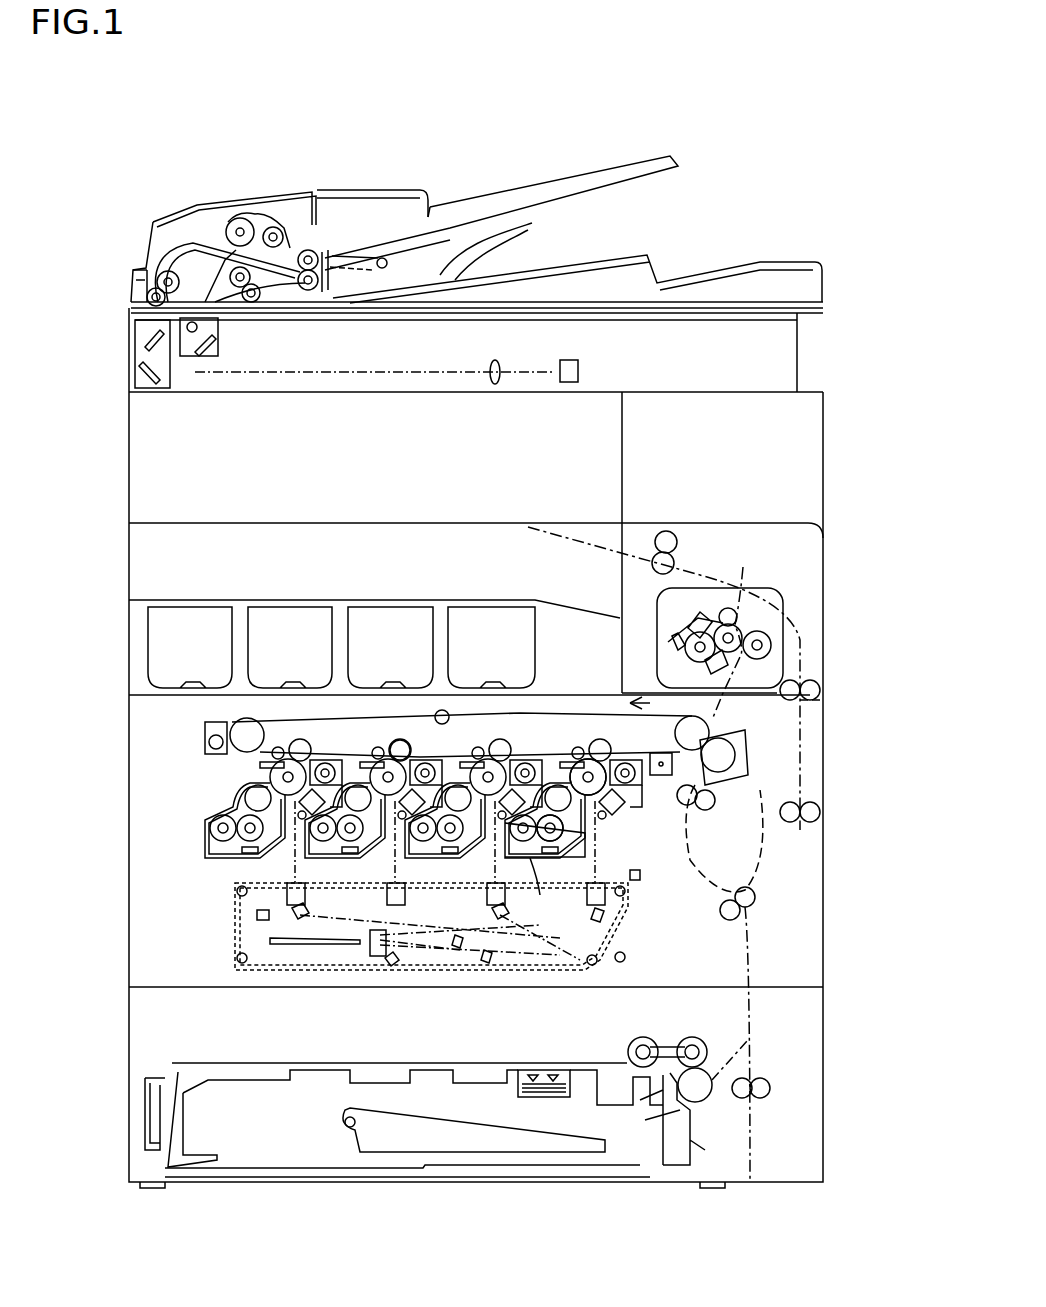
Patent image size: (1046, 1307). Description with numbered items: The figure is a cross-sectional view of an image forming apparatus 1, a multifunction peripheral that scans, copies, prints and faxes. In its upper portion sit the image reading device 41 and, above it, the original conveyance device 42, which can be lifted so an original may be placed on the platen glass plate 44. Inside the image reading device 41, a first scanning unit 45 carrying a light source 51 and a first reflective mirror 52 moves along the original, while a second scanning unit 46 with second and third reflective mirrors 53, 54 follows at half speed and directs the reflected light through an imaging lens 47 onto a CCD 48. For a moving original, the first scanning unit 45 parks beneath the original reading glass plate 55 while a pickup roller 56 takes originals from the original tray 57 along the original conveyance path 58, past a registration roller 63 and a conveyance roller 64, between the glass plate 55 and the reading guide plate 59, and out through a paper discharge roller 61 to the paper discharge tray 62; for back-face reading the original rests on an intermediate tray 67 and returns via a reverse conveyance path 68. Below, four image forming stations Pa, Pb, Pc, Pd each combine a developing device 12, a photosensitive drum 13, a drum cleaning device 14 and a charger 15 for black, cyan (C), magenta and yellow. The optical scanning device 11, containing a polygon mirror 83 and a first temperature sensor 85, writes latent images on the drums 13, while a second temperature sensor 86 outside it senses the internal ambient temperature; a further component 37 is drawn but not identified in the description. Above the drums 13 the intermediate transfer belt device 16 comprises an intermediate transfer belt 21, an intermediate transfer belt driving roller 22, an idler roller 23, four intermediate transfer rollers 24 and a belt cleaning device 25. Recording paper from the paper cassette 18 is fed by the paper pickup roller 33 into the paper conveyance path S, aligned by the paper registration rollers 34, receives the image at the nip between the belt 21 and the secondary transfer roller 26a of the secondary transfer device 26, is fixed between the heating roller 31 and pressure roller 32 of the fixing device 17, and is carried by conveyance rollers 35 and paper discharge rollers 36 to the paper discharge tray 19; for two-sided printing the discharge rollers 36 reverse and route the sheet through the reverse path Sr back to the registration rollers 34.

The image forming apparatus 1 is at (118, 852).
The optical scanning device 11 is at (595, 958).
The developing device 12 is at (538, 860).
The photosensitive drum 13 is at (575, 762).
The drum cleaning device 14 is at (630, 778).
The charger 15 is at (598, 816).
The intermediate transfer belt device 16 is at (538, 700).
The fixing device 17 is at (783, 640).
The paper cassette 18 is at (145, 1110).
The paper discharge tray 19 is at (262, 598).
The intermediate transfer belt 21 is at (538, 712).
The intermediate transfer belt driving roller 22 is at (700, 722).
The idler roller 23 is at (248, 730).
The intermediate transfer roller 24 is at (398, 740).
The belt cleaning device 25 is at (205, 742).
The secondary transfer device 26 is at (755, 782).
The secondary transfer roller 26a is at (760, 760).
The heating roller 31 is at (745, 590).
The pressure roller 32 is at (770, 645).
The paper pickup roller 33 is at (640, 1035).
The paper registration rollers 34 is at (712, 808).
The conveyance rollers 35 is at (758, 897).
The paper discharge rollers 36 is at (668, 530).
The sensor 37 is at (662, 778).
The image reading device 41 is at (823, 342).
The original conveyance device 42 is at (735, 242).
The platen glass plate 44 is at (645, 318).
The first scanning unit 45 is at (205, 360).
The second scanning unit 46 is at (152, 390).
The imaging lens 47 is at (495, 385).
The CCD 48 is at (569, 383).
The light source 51 is at (198, 328).
The first reflective mirror 52 is at (215, 350).
The second reflective mirror 53 is at (145, 335).
The third reflective mirror 54 is at (138, 370).
The original reading glass plate 55 is at (185, 290).
The pickup roller 56 is at (272, 226).
The original tray 57 is at (545, 175).
The original conveyance path 58 is at (148, 286).
The reading guide plate 59 is at (205, 245).
The paper discharge roller 61 is at (308, 292).
The paper discharge tray 62 is at (568, 265).
The registration roller 63 is at (150, 270).
The conveyance roller 64 is at (313, 250).
The intermediate tray 67 is at (382, 270).
The reverse conveyance path 68 is at (215, 300).
The polygon mirror 83 is at (315, 946).
The first temperature sensor 85 is at (262, 922).
The second temperature sensor 86 is at (636, 882).
The cyan C is at (650, 700).
The paper conveyance path S is at (698, 870).
The reverse path Sr is at (823, 708).
The image forming station Pa is at (572, 740).
The image forming station Pb is at (462, 740).
The image forming station Pc is at (365, 740).
The image forming station Pd is at (195, 840).